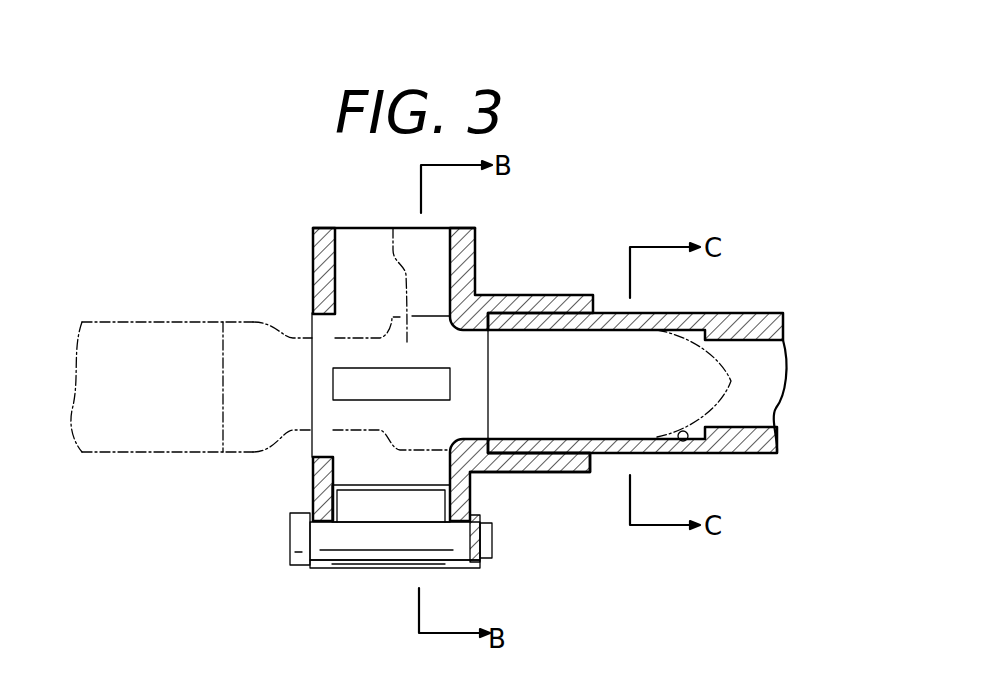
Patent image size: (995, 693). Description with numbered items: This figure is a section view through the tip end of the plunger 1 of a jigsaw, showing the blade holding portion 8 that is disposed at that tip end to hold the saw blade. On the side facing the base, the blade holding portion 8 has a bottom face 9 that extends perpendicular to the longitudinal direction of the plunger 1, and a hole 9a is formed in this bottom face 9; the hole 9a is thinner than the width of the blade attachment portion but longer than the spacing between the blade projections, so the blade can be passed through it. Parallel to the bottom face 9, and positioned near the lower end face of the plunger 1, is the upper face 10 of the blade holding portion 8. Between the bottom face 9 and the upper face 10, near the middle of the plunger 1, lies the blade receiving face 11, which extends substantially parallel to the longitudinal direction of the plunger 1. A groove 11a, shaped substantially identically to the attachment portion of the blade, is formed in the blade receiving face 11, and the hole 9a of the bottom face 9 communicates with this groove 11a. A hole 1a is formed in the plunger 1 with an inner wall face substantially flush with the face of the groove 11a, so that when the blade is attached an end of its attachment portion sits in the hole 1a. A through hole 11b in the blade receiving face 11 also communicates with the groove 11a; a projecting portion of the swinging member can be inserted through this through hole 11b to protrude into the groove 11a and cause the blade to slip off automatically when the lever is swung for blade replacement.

The plunger 1 is at (740, 313).
The hole 1a is at (688, 442).
The blade holding portion 8 is at (548, 473).
The bottom face 9 is at (313, 250).
The hole 9a is at (310, 322).
The upper face 10 is at (460, 230).
The blade receiving face 11 is at (353, 252).
The groove 11a is at (393, 228).
The through hole 11b is at (358, 392).